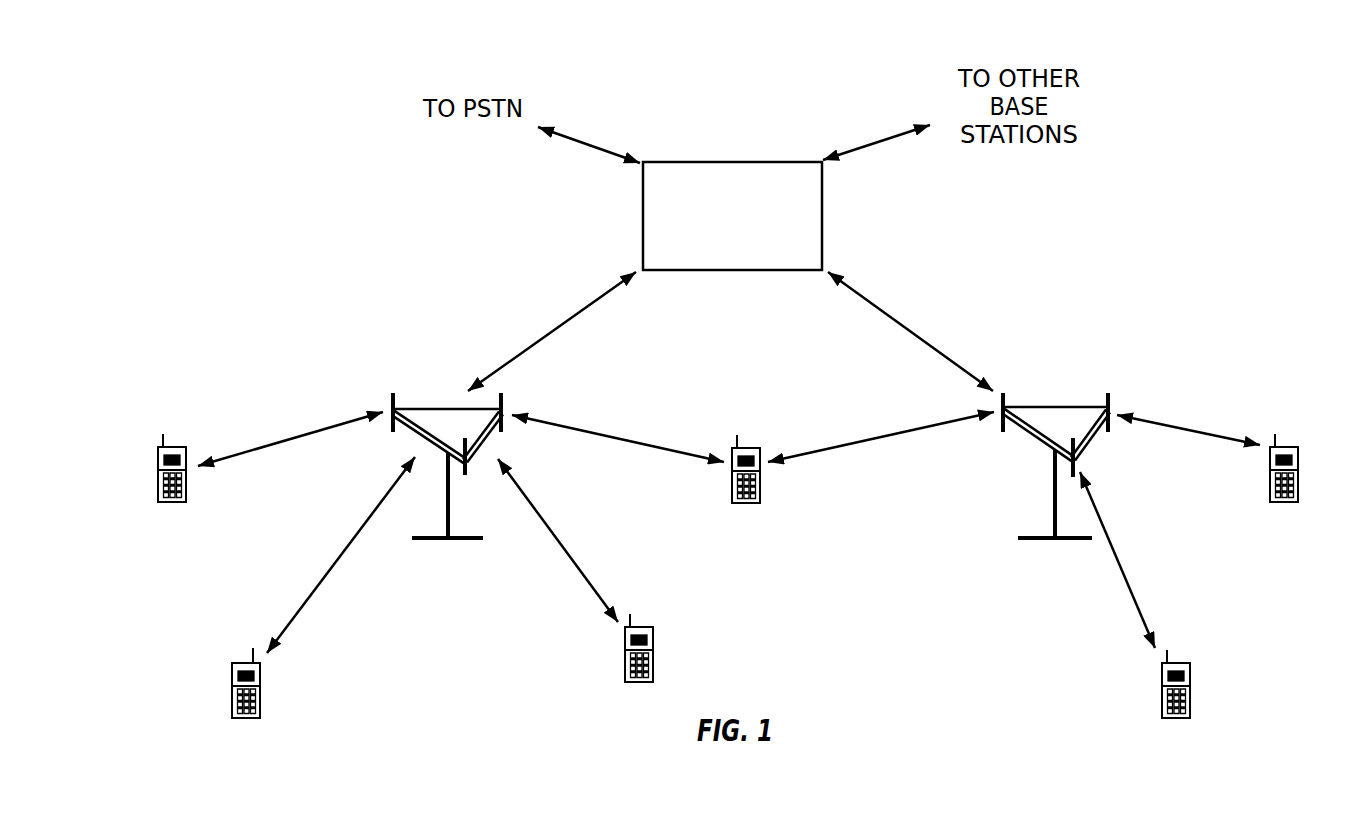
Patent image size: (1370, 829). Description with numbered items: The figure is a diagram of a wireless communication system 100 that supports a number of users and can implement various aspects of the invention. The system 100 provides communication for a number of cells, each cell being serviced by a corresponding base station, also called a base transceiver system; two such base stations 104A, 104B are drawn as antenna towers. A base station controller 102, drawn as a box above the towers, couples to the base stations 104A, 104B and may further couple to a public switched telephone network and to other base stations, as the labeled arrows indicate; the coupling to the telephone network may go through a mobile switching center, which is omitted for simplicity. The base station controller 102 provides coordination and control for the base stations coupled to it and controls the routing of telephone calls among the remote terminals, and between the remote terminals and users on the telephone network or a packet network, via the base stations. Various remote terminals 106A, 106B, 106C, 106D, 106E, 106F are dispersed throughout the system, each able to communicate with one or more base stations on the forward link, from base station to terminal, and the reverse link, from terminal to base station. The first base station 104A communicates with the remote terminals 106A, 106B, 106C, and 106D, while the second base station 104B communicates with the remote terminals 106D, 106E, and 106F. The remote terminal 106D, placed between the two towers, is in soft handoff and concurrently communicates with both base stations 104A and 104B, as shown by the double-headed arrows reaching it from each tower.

The wireless communication system 100 is at (1202, 68).
The base station controller 102 is at (728, 161).
The base station 104A is at (447, 454).
The base station 104B is at (1056, 454).
The remote terminal 106A is at (177, 456).
The remote terminal 106B is at (232, 671).
The remote terminal 106C is at (642, 636).
The remote terminal 106D is at (750, 457).
The remote terminal 106E is at (1179, 672).
The remote terminal 106F is at (1294, 456).